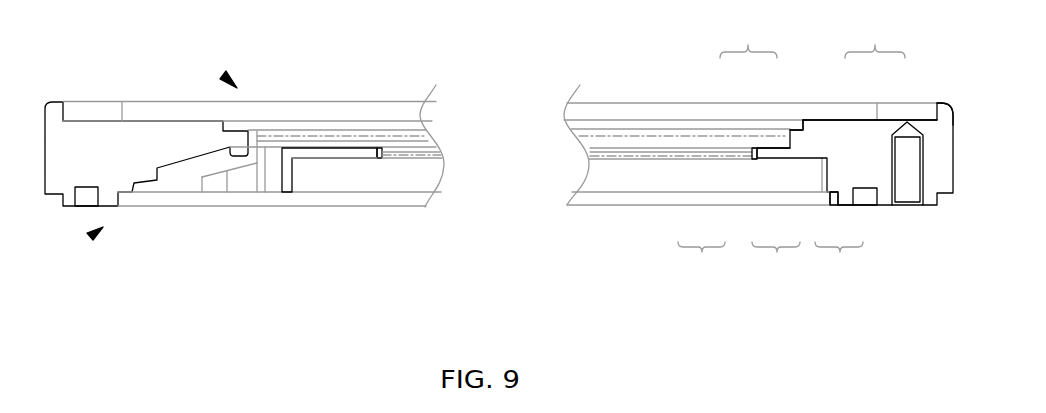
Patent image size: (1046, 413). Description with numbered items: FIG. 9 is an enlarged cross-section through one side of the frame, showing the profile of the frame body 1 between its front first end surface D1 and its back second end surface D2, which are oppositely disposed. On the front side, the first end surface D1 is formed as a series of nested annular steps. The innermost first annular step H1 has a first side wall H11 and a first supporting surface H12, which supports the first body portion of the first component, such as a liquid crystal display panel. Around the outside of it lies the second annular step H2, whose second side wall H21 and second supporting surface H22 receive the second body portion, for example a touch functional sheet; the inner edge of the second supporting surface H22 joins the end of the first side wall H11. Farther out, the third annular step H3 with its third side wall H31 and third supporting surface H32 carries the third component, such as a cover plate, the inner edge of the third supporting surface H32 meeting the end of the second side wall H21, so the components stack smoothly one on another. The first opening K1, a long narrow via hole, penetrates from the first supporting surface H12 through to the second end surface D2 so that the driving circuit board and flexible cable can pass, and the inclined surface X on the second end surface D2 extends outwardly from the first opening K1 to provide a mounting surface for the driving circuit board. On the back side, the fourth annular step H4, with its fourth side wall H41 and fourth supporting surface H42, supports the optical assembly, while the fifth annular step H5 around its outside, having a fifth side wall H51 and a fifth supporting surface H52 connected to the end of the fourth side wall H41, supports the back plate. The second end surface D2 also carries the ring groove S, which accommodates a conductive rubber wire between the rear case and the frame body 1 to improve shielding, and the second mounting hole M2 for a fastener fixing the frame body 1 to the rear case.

The frame body 1 is at (98, 152).
The third supporting surface H32 is at (147, 120).
The third side wall H31 is at (935, 118).
The third annular step H3 is at (836, 109).
The second annular step H2 is at (838, 67).
The second supporting surface H22 is at (241, 131).
The second side wall H21 is at (805, 128).
The first annular step H1 is at (701, 234).
The first supporting surface H12 is at (365, 150).
The first side wall H11 is at (770, 156).
The fourth annular step H4 is at (702, 241).
The fourth side wall H41 is at (292, 180).
The fourth supporting surface H42 is at (333, 158).
The fifth annular step H5 is at (839, 234).
The fifth side wall H51 is at (845, 205).
The fifth supporting surface H52 is at (123, 193).
The ring groove S is at (867, 198).
The second mounting hole M2 is at (907, 190).
The inclined surface X is at (175, 165).
The first opening K1 is at (265, 148).
The first end surface D1 is at (225, 77).
The second end surface D2 is at (92, 235).